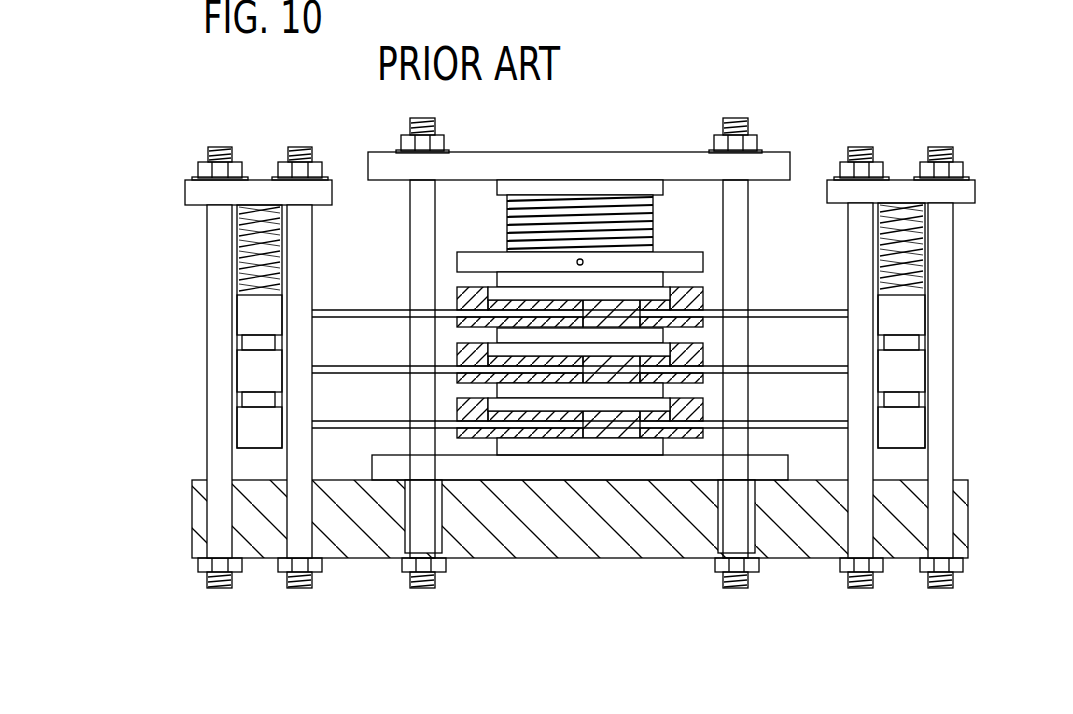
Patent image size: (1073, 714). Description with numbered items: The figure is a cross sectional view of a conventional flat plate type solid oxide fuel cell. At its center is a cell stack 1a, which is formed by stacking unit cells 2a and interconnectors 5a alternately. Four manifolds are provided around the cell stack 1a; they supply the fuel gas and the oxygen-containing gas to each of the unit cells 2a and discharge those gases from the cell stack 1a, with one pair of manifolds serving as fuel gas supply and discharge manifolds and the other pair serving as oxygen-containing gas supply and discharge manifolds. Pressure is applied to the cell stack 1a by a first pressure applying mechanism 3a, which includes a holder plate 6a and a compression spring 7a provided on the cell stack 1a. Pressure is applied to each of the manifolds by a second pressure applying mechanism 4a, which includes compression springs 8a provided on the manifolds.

The cell stack 1a is at (612, 460).
The unit cell 2a is at (672, 281).
The first pressure applying mechanism 3a is at (624, 146).
The second pressure applying mechanism 4a is at (220, 137).
The interconnector 5a is at (700, 300).
The holder plate 6a is at (674, 258).
The compression spring 7a is at (550, 213).
The compression spring 8a is at (932, 242).